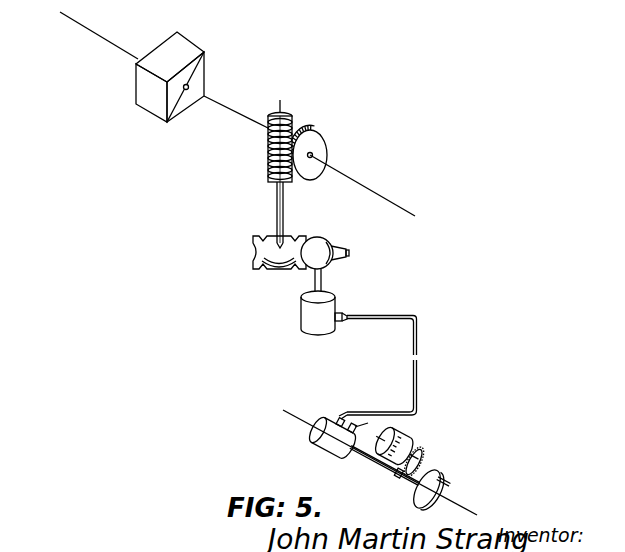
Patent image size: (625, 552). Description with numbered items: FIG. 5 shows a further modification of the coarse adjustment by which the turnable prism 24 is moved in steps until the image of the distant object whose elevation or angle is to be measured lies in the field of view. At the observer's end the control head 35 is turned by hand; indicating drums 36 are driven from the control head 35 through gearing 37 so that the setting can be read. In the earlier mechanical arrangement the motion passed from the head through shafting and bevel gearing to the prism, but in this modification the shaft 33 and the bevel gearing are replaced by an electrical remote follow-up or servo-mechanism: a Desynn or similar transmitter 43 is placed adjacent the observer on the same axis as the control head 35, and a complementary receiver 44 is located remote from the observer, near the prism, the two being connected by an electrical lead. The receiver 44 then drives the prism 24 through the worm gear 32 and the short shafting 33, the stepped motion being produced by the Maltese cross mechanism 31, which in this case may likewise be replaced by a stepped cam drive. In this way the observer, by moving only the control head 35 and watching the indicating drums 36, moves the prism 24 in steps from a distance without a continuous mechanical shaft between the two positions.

The turnable prism 24 is at (198, 77).
The worm gear 32 is at (268, 164).
The shafting 33 is at (285, 207).
The Maltese cross mechanism 31 is at (292, 271).
The receiver 44 is at (312, 323).
The transmitter 43 is at (333, 435).
The indicating drums 36 is at (412, 435).
The gearing 37 is at (398, 475).
The control head 35 is at (422, 495).